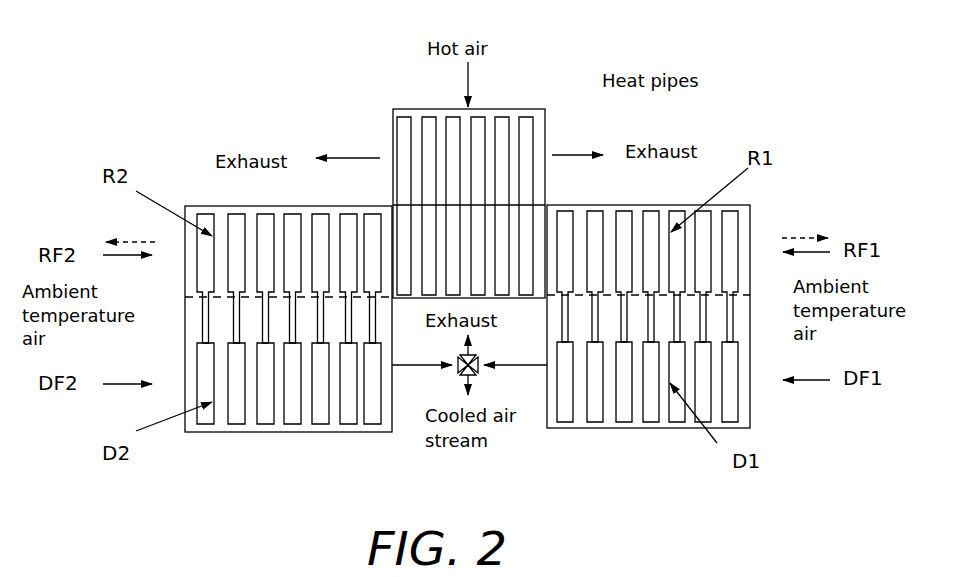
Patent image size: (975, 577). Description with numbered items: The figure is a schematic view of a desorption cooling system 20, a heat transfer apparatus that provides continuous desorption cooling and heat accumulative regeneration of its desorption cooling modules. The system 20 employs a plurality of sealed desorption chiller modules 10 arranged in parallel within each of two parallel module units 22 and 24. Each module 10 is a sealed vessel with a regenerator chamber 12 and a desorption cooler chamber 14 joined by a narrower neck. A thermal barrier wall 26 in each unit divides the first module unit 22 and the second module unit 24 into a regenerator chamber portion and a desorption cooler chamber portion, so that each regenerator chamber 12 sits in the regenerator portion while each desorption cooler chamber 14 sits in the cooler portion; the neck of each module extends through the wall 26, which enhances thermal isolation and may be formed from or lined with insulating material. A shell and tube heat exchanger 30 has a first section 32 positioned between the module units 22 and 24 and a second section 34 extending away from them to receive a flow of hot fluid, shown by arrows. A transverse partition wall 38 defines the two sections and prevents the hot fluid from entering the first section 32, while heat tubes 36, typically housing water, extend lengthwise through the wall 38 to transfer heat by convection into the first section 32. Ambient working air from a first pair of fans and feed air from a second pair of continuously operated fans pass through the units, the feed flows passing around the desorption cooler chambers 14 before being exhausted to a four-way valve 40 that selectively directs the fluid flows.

The desorption chiller module 10 is at (347, 434).
The regenerator chamber 12 is at (318, 240).
The desorption cooler chamber 14 is at (318, 410).
The desorption cooling system 20 is at (752, 105).
The first module unit 22 is at (758, 222).
The second module unit 24 is at (224, 434).
The thermal barrier wall 26 is at (184, 300).
The shell and tube heat exchanger 30 is at (391, 104).
The first section 32 is at (416, 240).
The second section 34 is at (514, 153).
The heat tubes 36 is at (526, 121).
The partition wall 38 is at (504, 200).
The four-way valve 40 is at (480, 375).